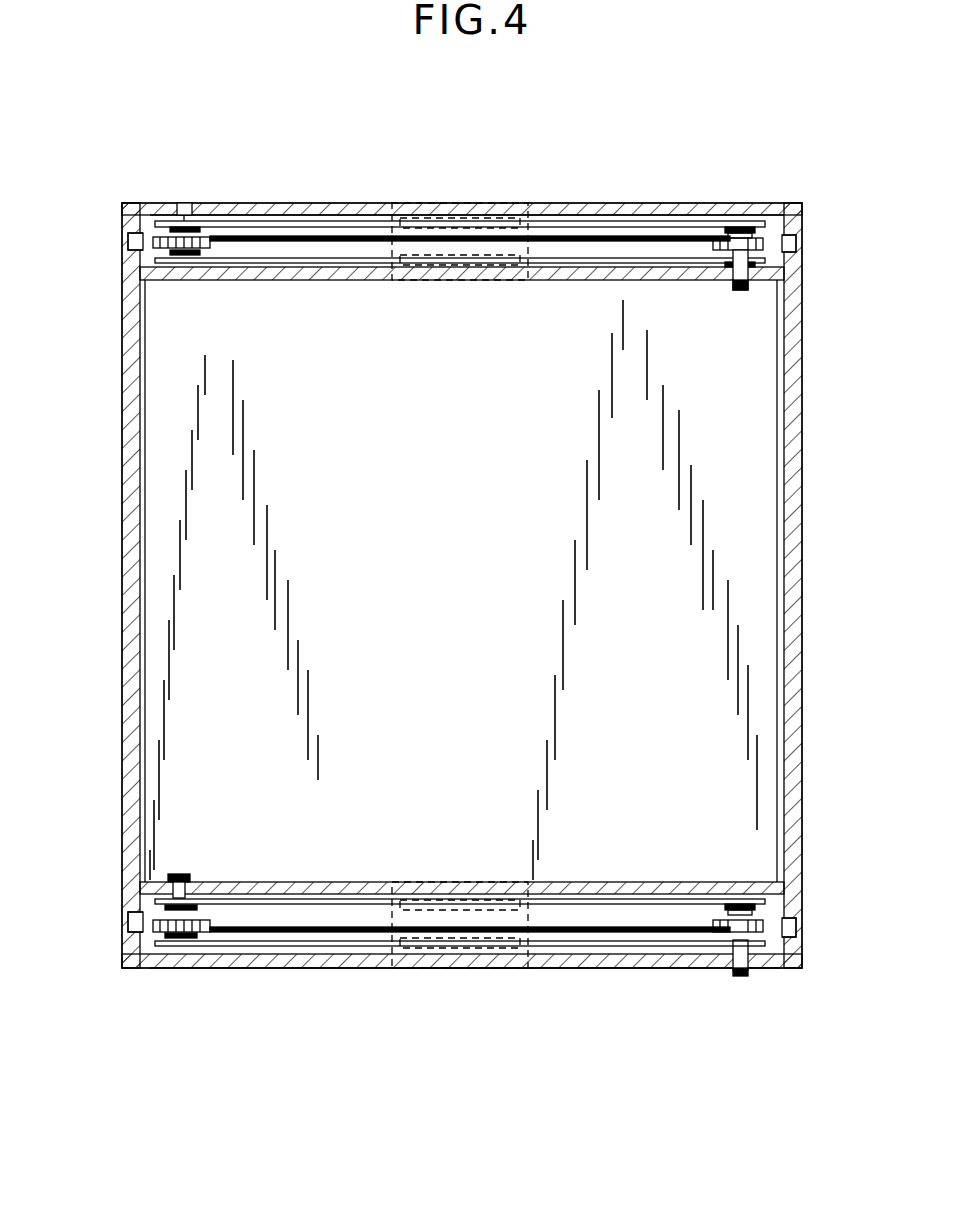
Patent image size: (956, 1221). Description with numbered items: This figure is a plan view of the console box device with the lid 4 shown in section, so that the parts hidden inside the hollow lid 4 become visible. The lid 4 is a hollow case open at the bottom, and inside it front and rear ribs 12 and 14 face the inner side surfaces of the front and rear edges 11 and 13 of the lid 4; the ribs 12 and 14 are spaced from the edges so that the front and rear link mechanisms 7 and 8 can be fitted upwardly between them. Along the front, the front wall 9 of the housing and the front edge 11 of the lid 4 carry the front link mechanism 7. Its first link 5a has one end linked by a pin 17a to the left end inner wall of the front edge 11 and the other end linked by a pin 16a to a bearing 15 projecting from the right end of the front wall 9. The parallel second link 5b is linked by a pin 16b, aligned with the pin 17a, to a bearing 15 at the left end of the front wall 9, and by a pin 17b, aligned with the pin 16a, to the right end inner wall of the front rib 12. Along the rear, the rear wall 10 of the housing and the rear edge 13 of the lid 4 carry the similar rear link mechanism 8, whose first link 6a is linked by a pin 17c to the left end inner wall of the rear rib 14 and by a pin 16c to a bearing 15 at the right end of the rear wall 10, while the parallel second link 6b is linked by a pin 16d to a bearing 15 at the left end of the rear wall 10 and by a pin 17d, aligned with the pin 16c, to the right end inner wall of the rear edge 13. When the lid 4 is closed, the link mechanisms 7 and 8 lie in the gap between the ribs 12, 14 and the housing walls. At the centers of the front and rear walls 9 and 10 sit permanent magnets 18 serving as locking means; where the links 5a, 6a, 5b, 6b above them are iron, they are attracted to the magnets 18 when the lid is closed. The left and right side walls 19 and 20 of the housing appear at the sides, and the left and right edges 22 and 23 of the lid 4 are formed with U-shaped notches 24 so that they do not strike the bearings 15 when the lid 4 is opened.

The lid 4 is at (806, 410).
The first link 5a is at (290, 215).
The second link 5b is at (295, 280).
The first link 6a is at (590, 899).
The second link 6b is at (595, 946).
The front link mechanism 7 is at (692, 210).
The rear link mechanism 8 is at (675, 954).
The front wall 9 is at (627, 236).
The rear wall 10 is at (380, 946).
The front edge 11 is at (545, 203).
The front rib 12 is at (548, 282).
The rear edge 13 is at (315, 968).
The rear rib 14 is at (318, 882).
The bearing 15 is at (224, 210).
The pin 16a is at (740, 227).
The pin 16b is at (185, 270).
The pin 16c is at (735, 904).
The pin 16d is at (185, 968).
The pin 17a is at (182, 203).
The pin 17b is at (740, 282).
The pin 17c is at (180, 876).
The pin 17d is at (738, 970).
The permanent magnet 18 is at (440, 205).
The left side wall 19 is at (140, 640).
The right side wall 20 is at (778, 637).
The left edge 22 is at (130, 487).
The right edge 23 is at (800, 490).
The U-shaped notch 24 is at (126, 254).